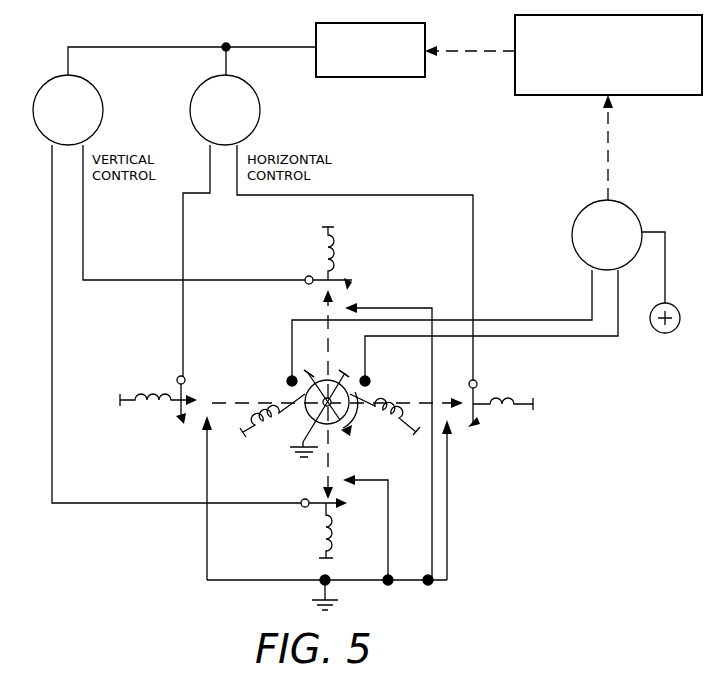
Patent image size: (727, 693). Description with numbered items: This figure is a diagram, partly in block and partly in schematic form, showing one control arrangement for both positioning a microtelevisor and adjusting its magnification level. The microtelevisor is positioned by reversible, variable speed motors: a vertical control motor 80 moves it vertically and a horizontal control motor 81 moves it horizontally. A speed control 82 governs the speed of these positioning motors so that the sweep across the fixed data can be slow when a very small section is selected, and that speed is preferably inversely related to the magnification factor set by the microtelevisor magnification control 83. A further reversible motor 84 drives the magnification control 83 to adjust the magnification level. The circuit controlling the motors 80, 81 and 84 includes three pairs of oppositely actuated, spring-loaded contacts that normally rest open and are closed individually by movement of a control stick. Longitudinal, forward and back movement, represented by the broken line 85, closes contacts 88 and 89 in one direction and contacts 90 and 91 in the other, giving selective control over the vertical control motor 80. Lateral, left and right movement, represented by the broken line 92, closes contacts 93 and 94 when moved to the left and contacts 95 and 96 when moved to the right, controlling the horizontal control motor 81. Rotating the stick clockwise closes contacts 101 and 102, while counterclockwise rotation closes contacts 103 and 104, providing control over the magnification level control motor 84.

The vertical control motor 80 is at (100, 92).
The horizontal control motor 81 is at (256, 90).
The speed control 82 is at (391, 78).
The microtelevisor magnification control 83 is at (553, 96).
The magnification level control motor 84 is at (639, 212).
The broken line representing longitudinal control stick movement 85 is at (324, 310).
The vertical control contact 88 is at (346, 478).
The vertical control contact 89 is at (348, 508).
The vertical control contact 90 is at (357, 274).
The vertical control contact 91 is at (352, 302).
The broken line representing lateral control stick movement 92 is at (218, 391).
The horizontal control contact 93 is at (478, 430).
The horizontal control contact 94 is at (452, 433).
The horizontal control contact 95 is at (176, 424).
The horizontal control contact 96 is at (202, 432).
The magnification control contact 101 is at (370, 381).
The magnification control contact 102 is at (344, 371).
The magnification control contact 103 is at (287, 381).
The magnification control contact 104 is at (309, 371).